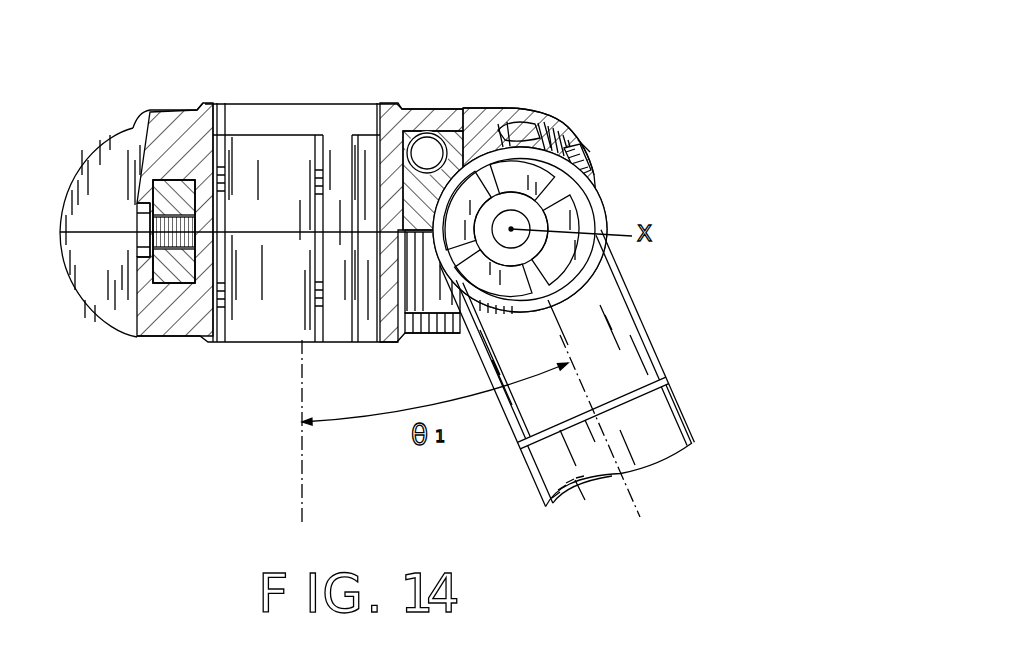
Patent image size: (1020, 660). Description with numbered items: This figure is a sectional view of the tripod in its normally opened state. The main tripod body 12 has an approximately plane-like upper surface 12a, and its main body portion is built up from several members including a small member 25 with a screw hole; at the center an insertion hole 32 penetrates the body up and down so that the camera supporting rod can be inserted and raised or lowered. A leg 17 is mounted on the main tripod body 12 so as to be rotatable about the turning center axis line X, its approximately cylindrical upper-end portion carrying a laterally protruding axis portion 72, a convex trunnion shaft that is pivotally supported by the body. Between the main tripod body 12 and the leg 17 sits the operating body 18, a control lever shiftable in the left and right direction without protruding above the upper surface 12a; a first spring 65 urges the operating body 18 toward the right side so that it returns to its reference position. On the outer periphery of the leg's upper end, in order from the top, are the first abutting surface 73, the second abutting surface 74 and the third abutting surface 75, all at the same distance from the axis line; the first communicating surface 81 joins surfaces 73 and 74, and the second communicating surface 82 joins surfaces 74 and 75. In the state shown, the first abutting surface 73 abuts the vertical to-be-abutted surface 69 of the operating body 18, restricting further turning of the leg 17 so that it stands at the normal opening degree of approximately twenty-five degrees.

The main tripod body 12 is at (174, 66).
The upper surface 12a is at (410, 128).
The leg 17 is at (714, 381).
The operating body 18 is at (602, 126).
The small member 25 is at (173, 287).
The insertion hole 32 is at (250, 138).
The first spring 65 is at (460, 126).
The to-be-abutted surface 69 is at (528, 117).
The axis portion 72 is at (530, 240).
The first abutting surface for an opening restriction 73 is at (508, 124).
The second abutting surface for an opening restriction 74 is at (550, 125).
The third abutting surface for an opening restriction 75 is at (583, 155).
The first communicating surface 81 is at (538, 122).
The second communicating surface 82 is at (580, 140).